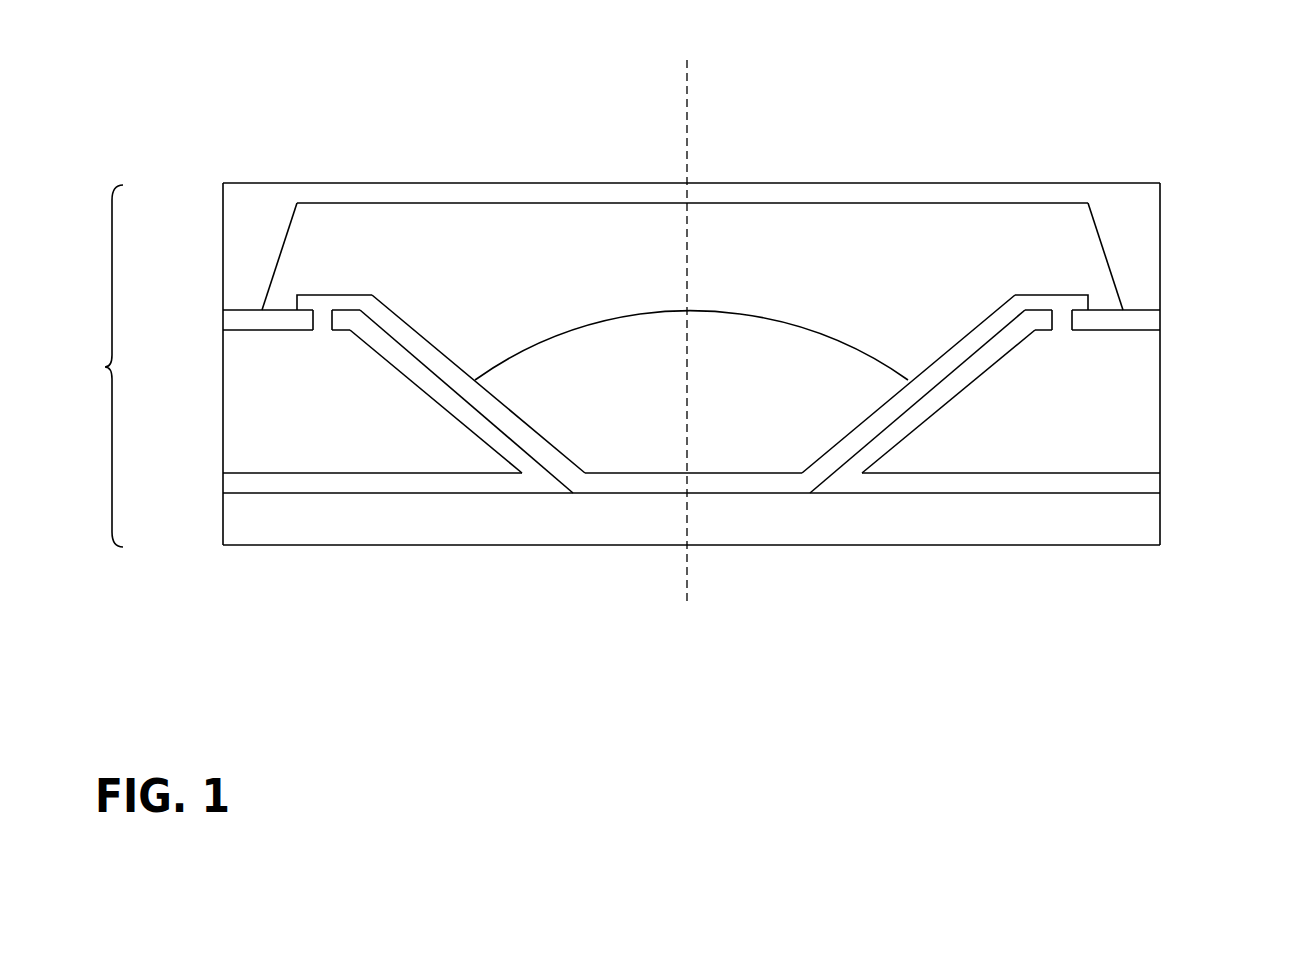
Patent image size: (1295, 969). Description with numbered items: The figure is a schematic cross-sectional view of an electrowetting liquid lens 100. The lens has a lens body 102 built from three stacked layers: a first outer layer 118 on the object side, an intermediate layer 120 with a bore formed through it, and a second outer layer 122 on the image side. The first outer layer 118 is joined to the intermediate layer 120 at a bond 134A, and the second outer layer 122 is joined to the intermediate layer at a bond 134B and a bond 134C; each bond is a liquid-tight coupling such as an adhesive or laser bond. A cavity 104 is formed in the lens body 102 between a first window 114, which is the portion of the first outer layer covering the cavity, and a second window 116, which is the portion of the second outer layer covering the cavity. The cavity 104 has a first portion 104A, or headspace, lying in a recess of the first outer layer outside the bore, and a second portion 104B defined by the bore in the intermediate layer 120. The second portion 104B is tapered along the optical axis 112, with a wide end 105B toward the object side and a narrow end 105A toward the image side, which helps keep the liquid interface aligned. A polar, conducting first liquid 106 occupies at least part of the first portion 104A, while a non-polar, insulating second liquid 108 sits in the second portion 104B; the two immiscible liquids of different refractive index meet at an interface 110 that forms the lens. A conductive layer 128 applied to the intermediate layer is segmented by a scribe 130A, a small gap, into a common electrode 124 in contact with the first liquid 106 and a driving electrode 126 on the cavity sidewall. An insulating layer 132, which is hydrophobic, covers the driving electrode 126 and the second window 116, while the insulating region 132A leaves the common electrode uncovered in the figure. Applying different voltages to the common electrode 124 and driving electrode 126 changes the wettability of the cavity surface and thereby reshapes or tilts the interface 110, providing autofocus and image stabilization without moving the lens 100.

The liquid lens 100 is at (305, 126).
The lens body 102 is at (90, 366).
The cavity 104 is at (912, 285).
The first portion of cavity 104A is at (1068, 223).
The second portion of cavity 104B is at (908, 342).
The narrow end 105A is at (575, 485).
The wide end 105B is at (373, 293).
The first liquid 106 is at (1008, 248).
The second liquid 108 is at (818, 368).
The interface 110 is at (663, 308).
The optical axis 112 is at (690, 93).
The first window 114 is at (777, 195).
The second window 116 is at (717, 520).
The first outer layer 118 is at (1140, 223).
The intermediate layer 120 is at (1132, 387).
The second outer layer 122 is at (1137, 515).
The common electrode 124 is at (247, 320).
The driving electrode 126 is at (393, 352).
The conductive layer 128 is at (375, 482).
The scribe 130A is at (323, 318).
The insulating layer 132 is at (617, 462).
The bottom reflective surface 132A is at (643, 482).
The bond 134A is at (1137, 310).
The bond 134B is at (917, 495).
The bond 134C is at (1075, 495).